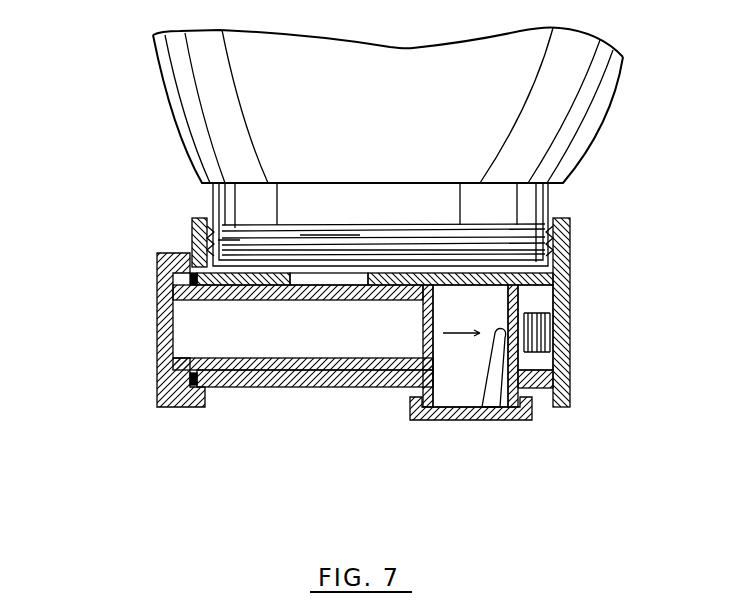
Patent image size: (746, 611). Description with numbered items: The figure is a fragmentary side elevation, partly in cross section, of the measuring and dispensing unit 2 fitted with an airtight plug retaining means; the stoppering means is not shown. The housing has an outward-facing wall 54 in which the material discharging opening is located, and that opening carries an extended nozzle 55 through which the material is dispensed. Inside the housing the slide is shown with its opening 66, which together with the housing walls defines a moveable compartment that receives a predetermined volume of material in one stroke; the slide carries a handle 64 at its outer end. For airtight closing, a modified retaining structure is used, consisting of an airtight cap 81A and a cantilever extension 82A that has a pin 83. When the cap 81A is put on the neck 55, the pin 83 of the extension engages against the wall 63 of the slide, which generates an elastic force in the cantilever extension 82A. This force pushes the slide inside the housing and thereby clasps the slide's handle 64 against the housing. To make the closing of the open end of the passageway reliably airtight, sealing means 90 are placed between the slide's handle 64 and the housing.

The measuring and dispensing unit 2 is at (562, 248).
The wall of the slide 63 is at (513, 313).
The handle 64 is at (168, 283).
The sealing means 90 is at (190, 277).
The opening 66 is at (458, 360).
The pin 83 is at (500, 337).
The wall of the housing 54 is at (365, 384).
The nozzle 55 is at (420, 407).
The airtight cap 81A is at (490, 390).
The cantilever extension 82A is at (532, 407).